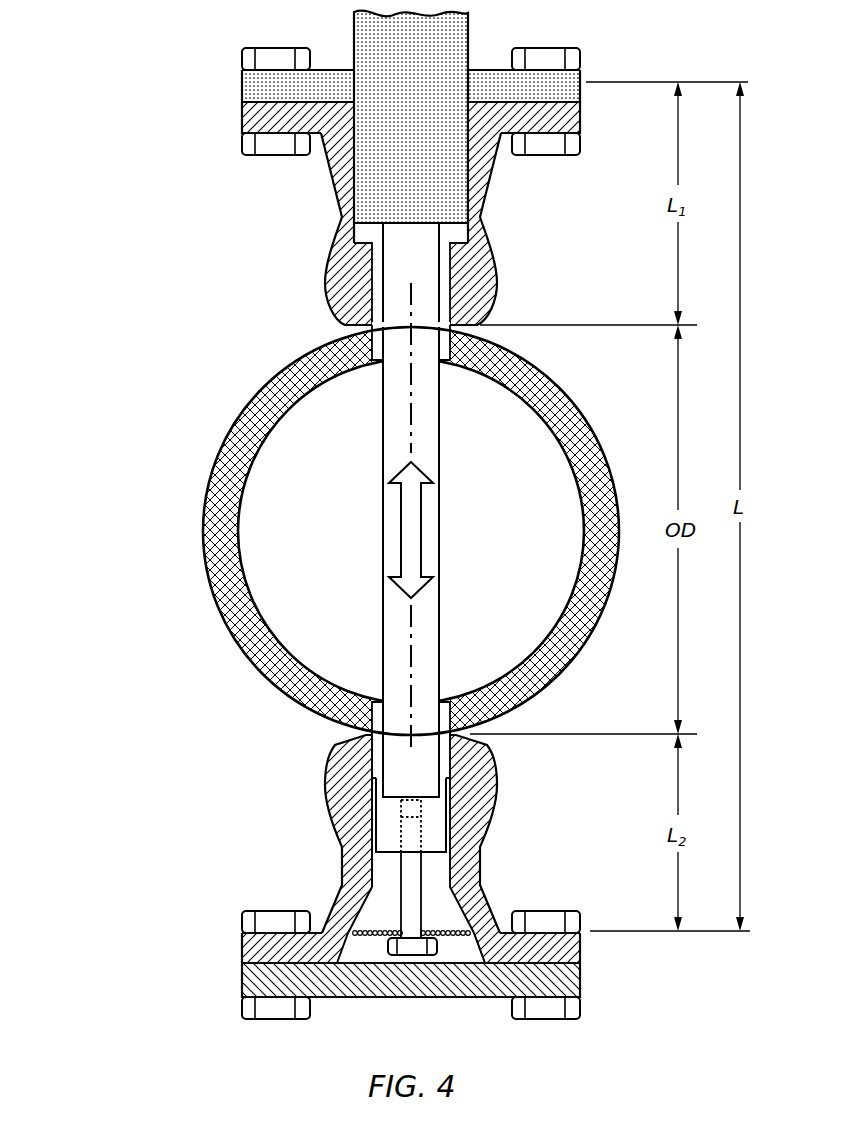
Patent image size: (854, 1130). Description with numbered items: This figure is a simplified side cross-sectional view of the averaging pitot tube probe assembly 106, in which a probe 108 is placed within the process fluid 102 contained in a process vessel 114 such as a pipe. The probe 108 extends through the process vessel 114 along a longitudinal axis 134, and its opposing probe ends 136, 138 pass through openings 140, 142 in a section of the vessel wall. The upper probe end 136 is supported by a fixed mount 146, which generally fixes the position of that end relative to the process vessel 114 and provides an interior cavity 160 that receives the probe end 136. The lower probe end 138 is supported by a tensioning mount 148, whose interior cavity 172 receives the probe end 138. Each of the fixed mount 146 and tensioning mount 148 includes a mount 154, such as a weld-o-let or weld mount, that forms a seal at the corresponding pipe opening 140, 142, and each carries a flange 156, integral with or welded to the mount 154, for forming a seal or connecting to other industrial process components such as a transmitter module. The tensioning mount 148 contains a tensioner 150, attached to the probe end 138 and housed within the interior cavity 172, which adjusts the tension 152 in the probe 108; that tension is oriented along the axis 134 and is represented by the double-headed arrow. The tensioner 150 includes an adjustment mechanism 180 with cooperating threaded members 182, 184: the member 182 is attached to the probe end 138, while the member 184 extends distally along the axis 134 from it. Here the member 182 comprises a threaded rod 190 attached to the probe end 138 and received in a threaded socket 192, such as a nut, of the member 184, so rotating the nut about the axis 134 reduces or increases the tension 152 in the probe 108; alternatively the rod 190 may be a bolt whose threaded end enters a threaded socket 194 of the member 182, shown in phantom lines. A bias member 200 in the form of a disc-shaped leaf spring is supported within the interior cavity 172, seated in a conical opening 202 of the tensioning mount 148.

The probe assembly 106 is at (146, 76).
The flange 156 is at (243, 118).
The fixed mount 146 is at (246, 226).
The mount 154 is at (494, 270).
The interior cavity 160 is at (443, 290).
The probe end 136 is at (393, 259).
The opening 140 is at (380, 356).
The process vessel 114 is at (218, 470).
The process fluid 102 is at (254, 598).
The probe 108 is at (434, 447).
The tension 152 is at (415, 527).
The longitudinal axis 134 is at (411, 646).
The opening 142 is at (444, 708).
The adjustment mechanism 180 is at (348, 770).
The probe end 138 is at (430, 762).
The interior cavity 172 is at (375, 772).
The threaded member 182 is at (438, 801).
The threaded socket 194 is at (400, 808).
The tensioning mount 148 is at (220, 829).
The bias member 200 is at (370, 930).
The threaded rod 190 is at (416, 890).
The tensioner 150 is at (371, 967).
The threaded member 184 is at (410, 952).
The threaded socket 192 is at (433, 951).
The conical opening 202 is at (463, 952).